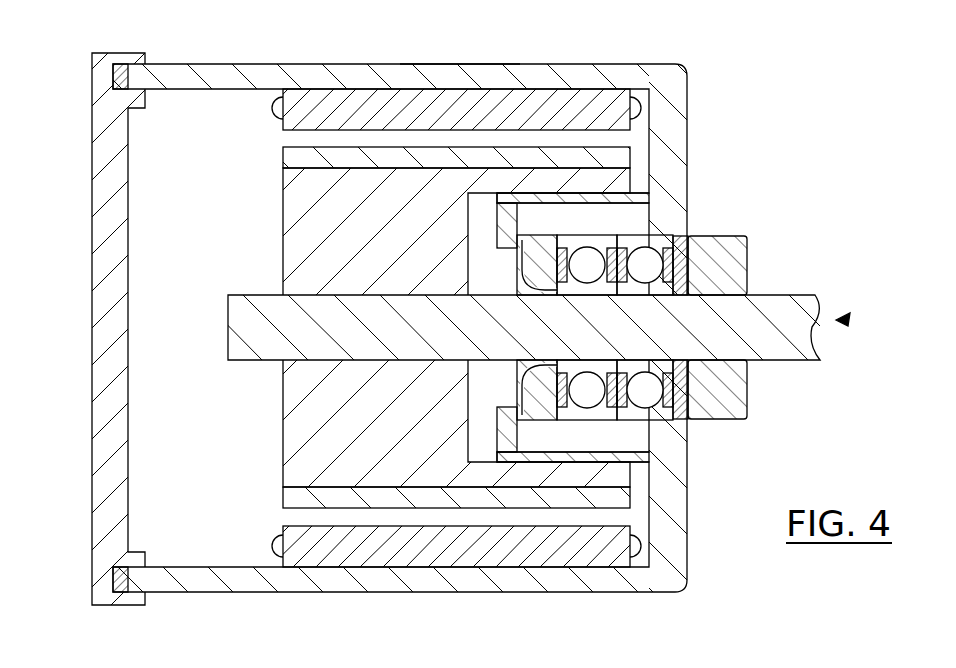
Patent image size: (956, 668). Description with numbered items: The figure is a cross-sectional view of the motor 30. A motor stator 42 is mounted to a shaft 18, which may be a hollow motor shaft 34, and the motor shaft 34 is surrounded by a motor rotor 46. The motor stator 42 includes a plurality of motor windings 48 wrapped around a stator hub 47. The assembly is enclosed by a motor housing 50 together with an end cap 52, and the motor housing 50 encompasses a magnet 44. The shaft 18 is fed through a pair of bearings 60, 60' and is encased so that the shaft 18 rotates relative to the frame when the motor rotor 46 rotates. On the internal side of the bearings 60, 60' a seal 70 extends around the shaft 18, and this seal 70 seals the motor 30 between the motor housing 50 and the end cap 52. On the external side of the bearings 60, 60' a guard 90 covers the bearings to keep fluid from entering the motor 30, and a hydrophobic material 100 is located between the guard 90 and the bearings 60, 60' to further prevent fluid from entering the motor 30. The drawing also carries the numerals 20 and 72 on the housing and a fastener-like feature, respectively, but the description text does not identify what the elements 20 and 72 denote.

The shaft 18 is at (848, 318).
The housing 20 is at (540, 63).
The motor 30 is at (752, 70).
The motor shaft 34 is at (790, 312).
The motor stator 42 is at (641, 88).
The magnet 44 is at (300, 157).
The motor rotor 46 is at (283, 225).
The stator hub 47 is at (335, 98).
The motor windings 48 is at (585, 553).
The motor housing 50 is at (470, 70).
The end cap 52 is at (92, 160).
The bearing 60 is at (652, 365).
The bearing 60' is at (688, 347).
The seal 70 is at (528, 247).
The fastener 72 is at (118, 578).
The guard 90 is at (732, 245).
The hydrophobic material 100 is at (682, 372).